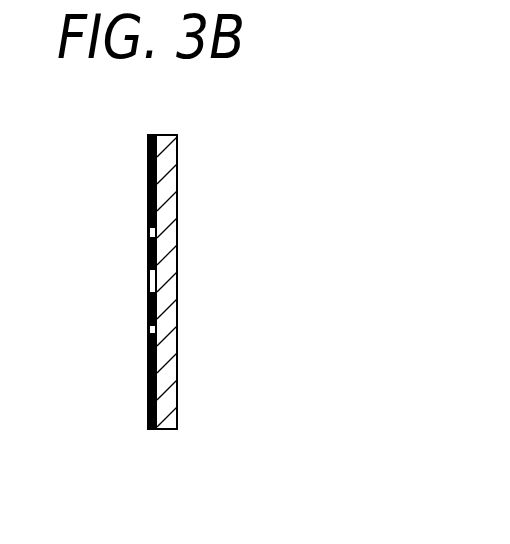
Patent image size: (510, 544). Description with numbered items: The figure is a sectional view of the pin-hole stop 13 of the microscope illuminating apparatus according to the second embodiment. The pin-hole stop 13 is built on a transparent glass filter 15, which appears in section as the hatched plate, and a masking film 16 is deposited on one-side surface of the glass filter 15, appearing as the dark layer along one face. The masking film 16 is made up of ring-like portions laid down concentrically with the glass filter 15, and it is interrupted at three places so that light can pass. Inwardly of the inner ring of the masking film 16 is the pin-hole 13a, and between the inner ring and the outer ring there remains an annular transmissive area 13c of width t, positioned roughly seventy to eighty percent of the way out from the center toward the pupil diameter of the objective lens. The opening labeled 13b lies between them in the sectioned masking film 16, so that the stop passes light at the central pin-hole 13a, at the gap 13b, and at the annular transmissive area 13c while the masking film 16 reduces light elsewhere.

The pin-hole stop 13 is at (154, 259).
The transparent glass filter 15 is at (178, 191).
The masking film 16 is at (106, 281).
The pin-hole 13a is at (148, 278).
The second aperture 13b is at (148, 313).
The annular transmissive area 13c is at (148, 330).